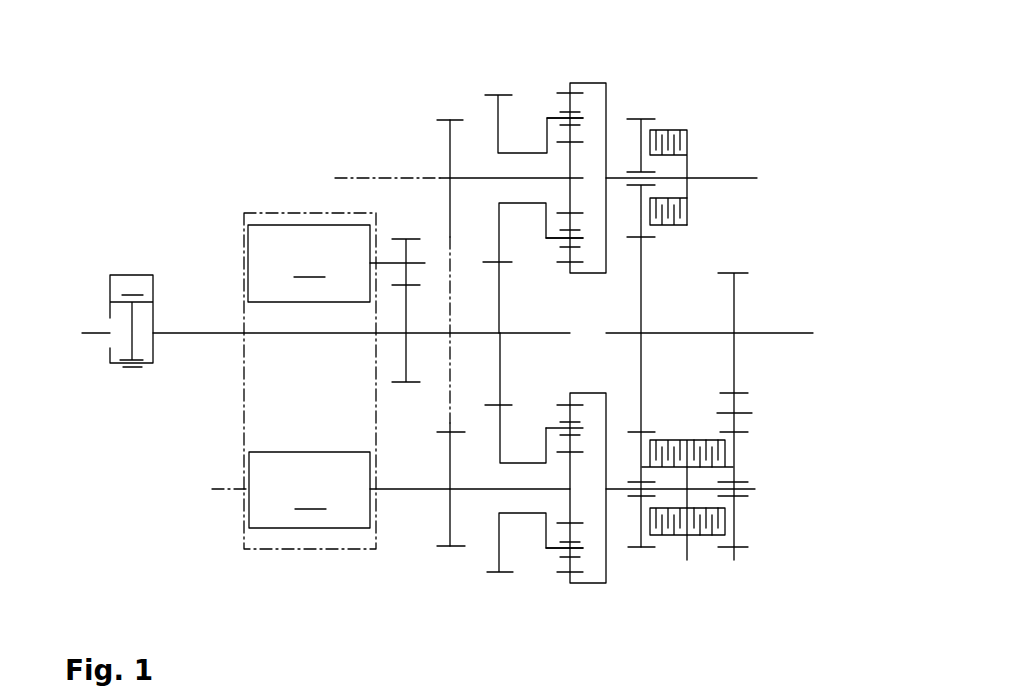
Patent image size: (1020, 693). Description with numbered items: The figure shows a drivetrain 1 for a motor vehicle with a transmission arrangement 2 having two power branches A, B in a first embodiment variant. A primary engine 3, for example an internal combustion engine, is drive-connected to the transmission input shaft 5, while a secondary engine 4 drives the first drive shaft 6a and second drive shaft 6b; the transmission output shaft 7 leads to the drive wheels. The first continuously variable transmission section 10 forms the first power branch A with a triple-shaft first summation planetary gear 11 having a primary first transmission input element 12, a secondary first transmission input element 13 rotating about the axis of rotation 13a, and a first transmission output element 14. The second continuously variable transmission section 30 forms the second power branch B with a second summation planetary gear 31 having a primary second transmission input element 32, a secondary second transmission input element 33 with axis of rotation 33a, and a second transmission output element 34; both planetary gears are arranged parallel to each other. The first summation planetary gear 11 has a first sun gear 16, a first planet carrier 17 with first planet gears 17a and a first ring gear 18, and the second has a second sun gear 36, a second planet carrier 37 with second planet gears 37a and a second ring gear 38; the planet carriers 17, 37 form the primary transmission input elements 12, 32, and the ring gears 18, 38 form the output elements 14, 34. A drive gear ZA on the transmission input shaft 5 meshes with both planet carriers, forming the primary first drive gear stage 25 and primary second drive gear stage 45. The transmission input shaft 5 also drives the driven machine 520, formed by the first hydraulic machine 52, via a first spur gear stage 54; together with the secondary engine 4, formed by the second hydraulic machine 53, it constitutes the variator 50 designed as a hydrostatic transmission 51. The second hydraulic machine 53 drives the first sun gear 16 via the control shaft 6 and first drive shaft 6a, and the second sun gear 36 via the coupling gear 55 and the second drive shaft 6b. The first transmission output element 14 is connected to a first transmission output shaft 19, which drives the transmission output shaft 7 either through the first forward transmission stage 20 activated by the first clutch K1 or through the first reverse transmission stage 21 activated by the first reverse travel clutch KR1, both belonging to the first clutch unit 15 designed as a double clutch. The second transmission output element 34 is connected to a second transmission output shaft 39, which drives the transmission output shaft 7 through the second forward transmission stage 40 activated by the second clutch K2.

The drivetrain 1 is at (268, 133).
The transmission arrangement 2 is at (428, 85).
The primary engine 3 is at (97, 290).
The secondary engine 4 is at (267, 522).
The transmission input shaft 5 is at (213, 338).
The control shaft 6 is at (407, 492).
The first drive shaft 6a is at (452, 569).
The second drive shaft 6b is at (484, 178).
The transmission output shaft 7 is at (808, 331).
The first continuously variable transmission section 10 is at (533, 593).
The first summation planetary gear 11 is at (612, 593).
The primary first transmission input element 12 is at (502, 428).
The secondary first transmission input element 13 is at (568, 472).
The axis of rotation 13a is at (222, 492).
The first transmission output element 14 is at (607, 533).
The first clutch unit 15 is at (673, 433).
The first sun gear 16 is at (572, 500).
The first planet carrier 17 is at (523, 514).
The first planet gears 17a is at (573, 411).
The first ring gear 18 is at (587, 587).
The first transmission output shaft 19 is at (613, 487).
The first forward transmission stage 20 is at (653, 560).
The first reverse transmission stage 21 is at (743, 320).
The primary first drive gear stage 25 is at (492, 402).
The second continuously variable transmission section 30 is at (545, 104).
The second summation planetary gear 31 is at (609, 79).
The primary second transmission input element 32 is at (498, 232).
The secondary second transmission input element 33 is at (560, 164).
The axis of rotation 33a is at (368, 177).
The second transmission output element 34 is at (608, 117).
The second sun gear 36 is at (570, 187).
The second planet carrier 37 is at (546, 242).
The second planet gears 37a is at (573, 222).
The second ring gear 38 is at (587, 274).
The second transmission output shaft 39 is at (730, 177).
The second forward transmission stage 40 is at (663, 235).
The primary second drive gear stage 45 is at (495, 267).
The variator 50 is at (240, 212).
The hydrostatic transmission 51 is at (243, 435).
The first hydraulic machine 52 is at (309, 263).
The second hydraulic machine 53 is at (309, 490).
The first spur gear stage 54 is at (402, 318).
The coupling gear 55 is at (452, 390).
The driven machine 520 is at (262, 263).
The first power branch A is at (417, 573).
The second power branch B is at (417, 142).
The first clutch K1 is at (675, 537).
The second clutch K2 is at (678, 128).
The first reverse travel clutch KR1 is at (712, 537).
The drive gear ZA is at (500, 372).